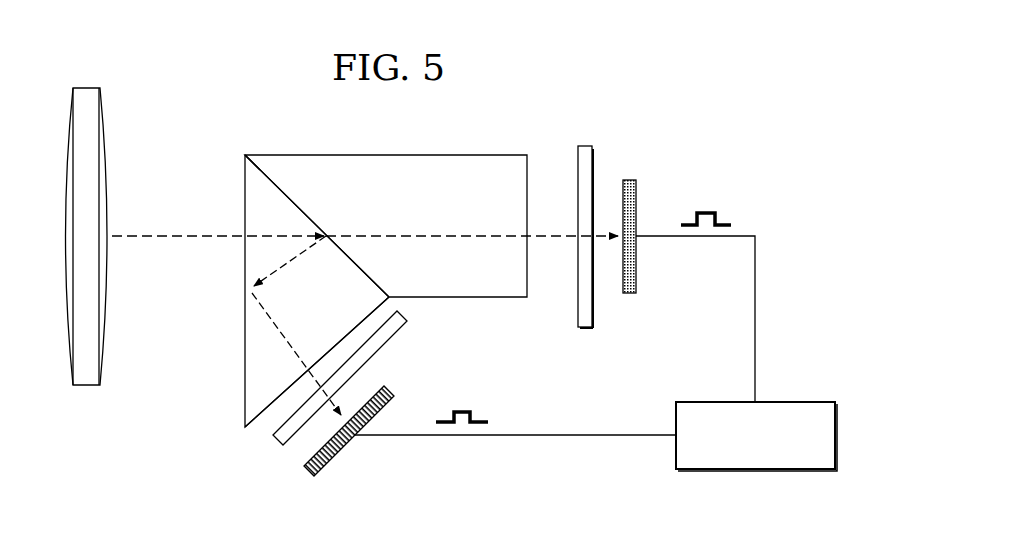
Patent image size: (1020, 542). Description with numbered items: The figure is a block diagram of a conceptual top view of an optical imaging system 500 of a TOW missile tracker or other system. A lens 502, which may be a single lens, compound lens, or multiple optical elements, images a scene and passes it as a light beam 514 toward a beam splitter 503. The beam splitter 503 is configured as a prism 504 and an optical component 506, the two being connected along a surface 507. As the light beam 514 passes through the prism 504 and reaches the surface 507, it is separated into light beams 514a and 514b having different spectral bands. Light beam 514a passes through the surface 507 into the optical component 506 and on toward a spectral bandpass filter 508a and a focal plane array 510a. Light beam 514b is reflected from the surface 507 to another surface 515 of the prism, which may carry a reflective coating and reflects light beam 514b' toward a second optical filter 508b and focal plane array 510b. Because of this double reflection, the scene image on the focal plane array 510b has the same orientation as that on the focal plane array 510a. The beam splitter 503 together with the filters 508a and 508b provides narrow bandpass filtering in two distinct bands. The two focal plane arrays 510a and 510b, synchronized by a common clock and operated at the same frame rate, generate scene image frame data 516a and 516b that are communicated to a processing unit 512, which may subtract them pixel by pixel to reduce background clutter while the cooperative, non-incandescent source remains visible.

The optical imaging system 500 is at (730, 69).
The lens 502 is at (90, 87).
The beam splitter 503 is at (243, 137).
The prism 504 is at (243, 361).
The optical component 506 is at (388, 155).
The surface 507 is at (298, 207).
The spectral bandpass filter 508a is at (584, 143).
The spectral bandpass filter 508b is at (274, 438).
The focal plane array 510a is at (632, 178).
The focal plane array 510b is at (337, 455).
The processing unit 512 is at (838, 440).
The light beam 514 is at (162, 235).
The light beam 514a is at (468, 233).
The light beam 514b is at (301, 275).
The light beam 514b' is at (245, 354).
The surface 515 is at (252, 395).
The scene image frame data 516a is at (708, 208).
The scene image frame data 516b is at (463, 406).